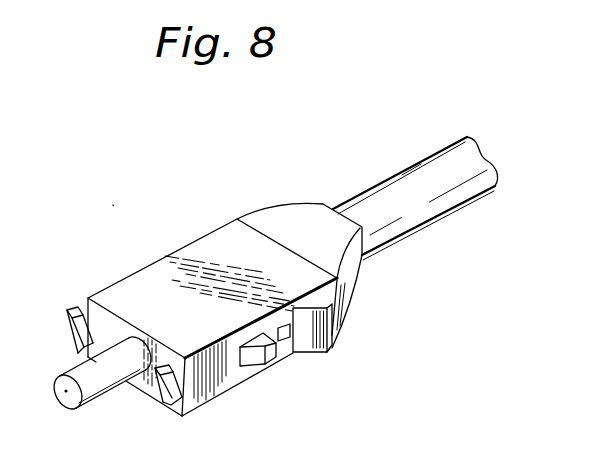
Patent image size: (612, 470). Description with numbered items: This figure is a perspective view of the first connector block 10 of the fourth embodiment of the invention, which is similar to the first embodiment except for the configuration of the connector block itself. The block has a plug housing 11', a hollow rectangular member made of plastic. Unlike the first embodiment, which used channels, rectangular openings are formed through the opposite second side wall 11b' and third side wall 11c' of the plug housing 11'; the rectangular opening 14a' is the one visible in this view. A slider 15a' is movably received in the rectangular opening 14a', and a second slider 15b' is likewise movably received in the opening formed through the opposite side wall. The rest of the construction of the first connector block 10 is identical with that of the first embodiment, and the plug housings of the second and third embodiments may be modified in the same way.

The first connector block 10 is at (113, 205).
The plug housing 11' is at (212, 308).
The second side wall 11b' is at (194, 408).
The third side wall 11c' is at (100, 326).
The rectangular opening 14a' is at (277, 365).
The slider 15a' is at (343, 337).
The slider 15b' is at (347, 242).